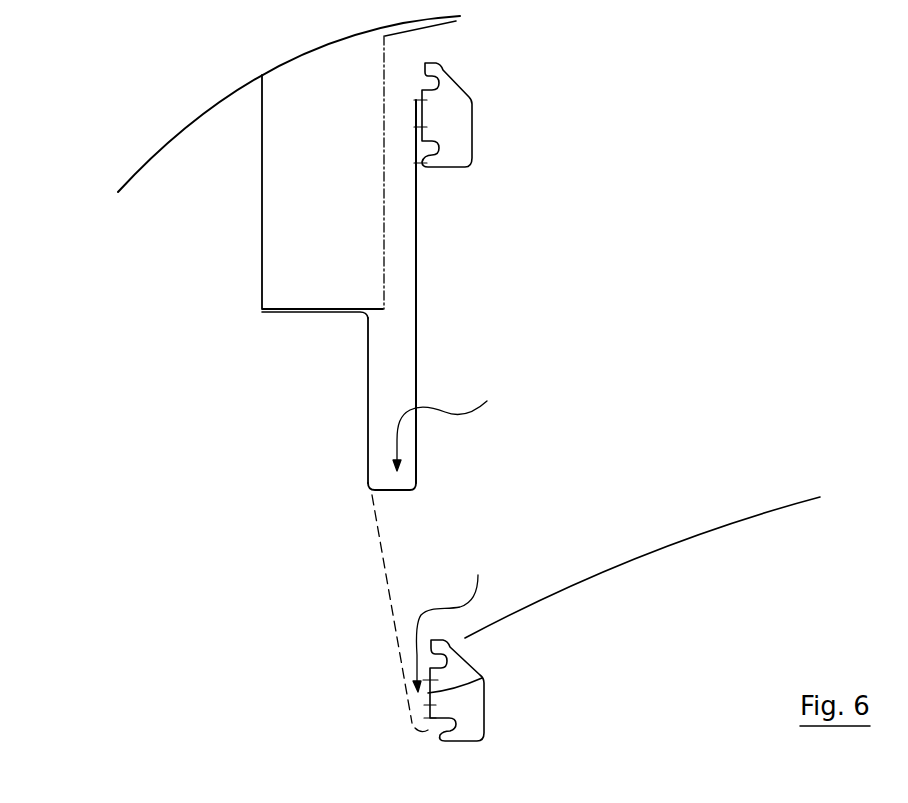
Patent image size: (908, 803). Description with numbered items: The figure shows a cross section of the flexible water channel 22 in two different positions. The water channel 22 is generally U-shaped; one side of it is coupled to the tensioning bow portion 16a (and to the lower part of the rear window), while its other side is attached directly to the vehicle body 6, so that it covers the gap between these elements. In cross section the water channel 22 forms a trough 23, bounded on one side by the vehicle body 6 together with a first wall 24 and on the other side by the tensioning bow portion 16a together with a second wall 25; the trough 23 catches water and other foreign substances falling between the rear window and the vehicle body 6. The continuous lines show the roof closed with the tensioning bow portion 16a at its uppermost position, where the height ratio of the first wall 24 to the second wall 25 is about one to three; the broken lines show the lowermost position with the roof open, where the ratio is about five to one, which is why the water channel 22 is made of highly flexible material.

The vehicle body 6 is at (260, 289).
The tensioning bow portion 16a is at (460, 143).
The water channel 22 is at (390, 423).
The trough 23 is at (447, 535).
The first wall 24 is at (368, 392).
The second wall 25 is at (417, 329).